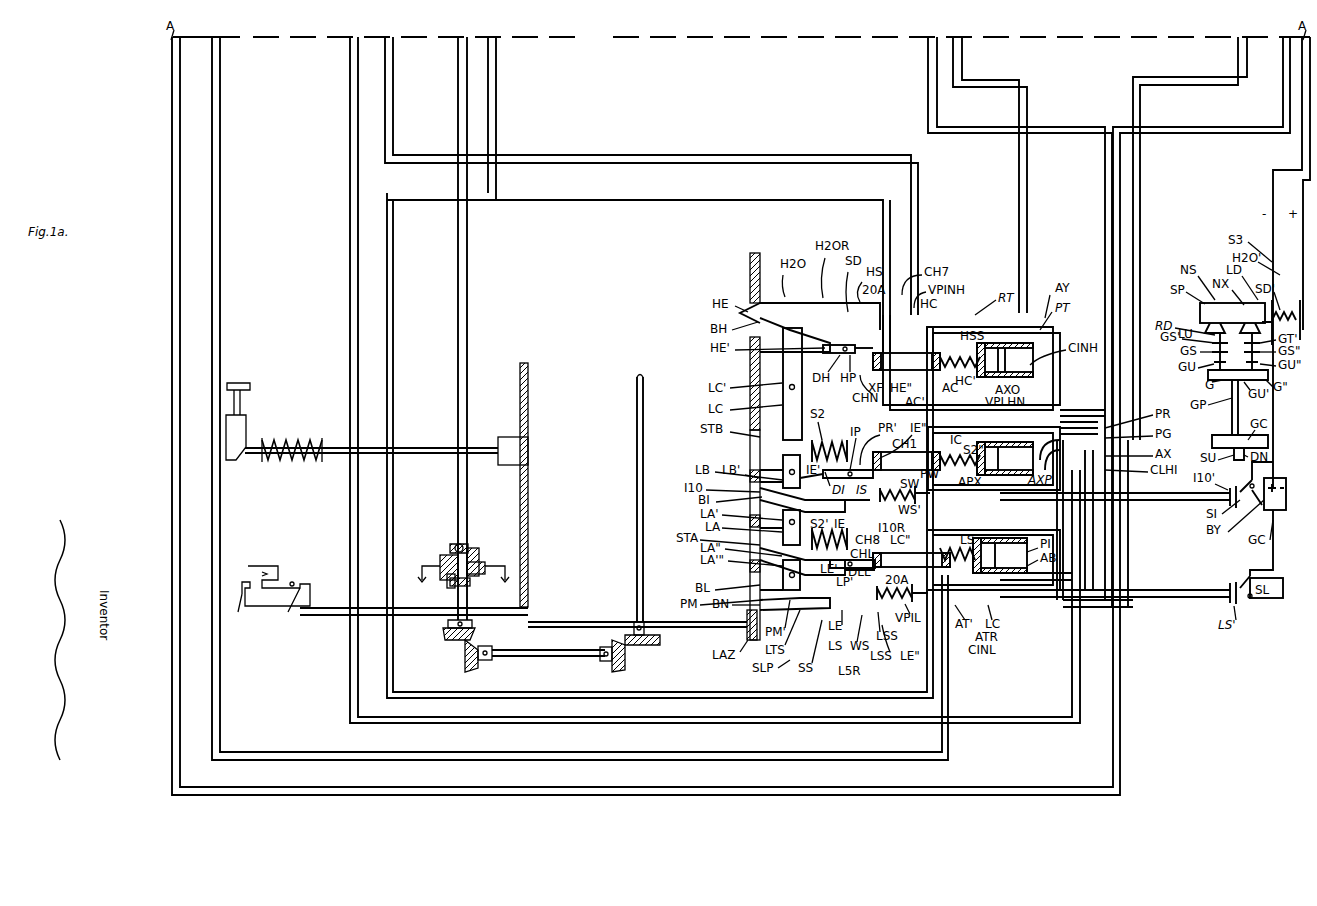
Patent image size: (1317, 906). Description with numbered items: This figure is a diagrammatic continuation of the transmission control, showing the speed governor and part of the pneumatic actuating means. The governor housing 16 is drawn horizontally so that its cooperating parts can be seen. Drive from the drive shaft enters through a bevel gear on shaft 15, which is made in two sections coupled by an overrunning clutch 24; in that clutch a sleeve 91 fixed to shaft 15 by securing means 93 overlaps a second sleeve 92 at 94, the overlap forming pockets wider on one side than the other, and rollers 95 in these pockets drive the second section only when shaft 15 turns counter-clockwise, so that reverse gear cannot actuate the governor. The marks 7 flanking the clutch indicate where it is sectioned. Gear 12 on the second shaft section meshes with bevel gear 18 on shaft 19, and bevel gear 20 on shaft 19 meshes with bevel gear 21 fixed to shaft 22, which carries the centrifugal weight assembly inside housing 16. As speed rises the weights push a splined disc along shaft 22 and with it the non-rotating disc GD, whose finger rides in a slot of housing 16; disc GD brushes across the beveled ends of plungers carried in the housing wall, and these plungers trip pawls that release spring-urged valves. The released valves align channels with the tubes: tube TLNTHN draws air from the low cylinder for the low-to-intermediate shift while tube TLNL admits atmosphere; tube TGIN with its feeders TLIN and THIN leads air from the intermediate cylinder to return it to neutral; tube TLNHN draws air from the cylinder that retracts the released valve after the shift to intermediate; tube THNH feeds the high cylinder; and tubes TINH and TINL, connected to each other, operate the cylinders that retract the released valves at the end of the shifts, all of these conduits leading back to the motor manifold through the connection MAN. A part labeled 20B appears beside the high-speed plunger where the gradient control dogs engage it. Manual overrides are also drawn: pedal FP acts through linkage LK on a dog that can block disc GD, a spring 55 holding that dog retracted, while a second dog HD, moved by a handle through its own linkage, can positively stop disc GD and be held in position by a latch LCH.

The bracket 7 is at (465, 582).
The gear 12 is at (447, 626).
The shaft 15 is at (457, 78).
The housing 16 is at (528, 382).
The beveled gear 18 is at (486, 645).
The shaft 19 is at (578, 656).
The beveled gear 20 is at (604, 668).
The beveled gear 21 is at (655, 638).
The shaft 22 is at (636, 548).
The overrunning clutch 24 is at (440, 558).
The spring 55 is at (300, 436).
The sleeve 91 is at (478, 550).
The sleeve 92 is at (466, 586).
The securing means 93 is at (452, 546).
The overlap 94 is at (476, 585).
The rollers 95 is at (480, 564).
The contact bank 20B is at (1200, 313).
The tube TINL is at (180, 120).
The tube TLNL is at (220, 70).
The tube TLNHN is at (350, 63).
The tube THNH is at (393, 64).
The tube THIN is at (442, 194).
The tube TLIN is at (664, 194).
The tube TGIN is at (496, 54).
The tube TLNTHN is at (926, 66).
The tube TINH is at (962, 62).
The line conductor MAN is at (1238, 58).
The pedal FP is at (256, 382).
The linkage LK is at (440, 448).
The disc GD is at (515, 446).
The latch LCH is at (275, 568).
The dog HD is at (340, 616).